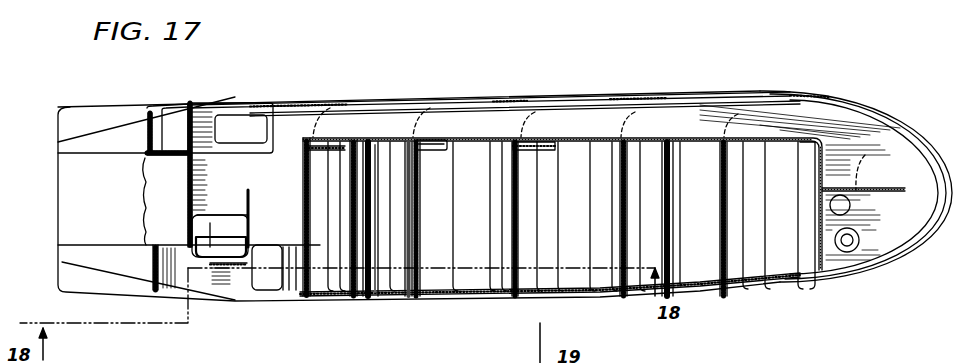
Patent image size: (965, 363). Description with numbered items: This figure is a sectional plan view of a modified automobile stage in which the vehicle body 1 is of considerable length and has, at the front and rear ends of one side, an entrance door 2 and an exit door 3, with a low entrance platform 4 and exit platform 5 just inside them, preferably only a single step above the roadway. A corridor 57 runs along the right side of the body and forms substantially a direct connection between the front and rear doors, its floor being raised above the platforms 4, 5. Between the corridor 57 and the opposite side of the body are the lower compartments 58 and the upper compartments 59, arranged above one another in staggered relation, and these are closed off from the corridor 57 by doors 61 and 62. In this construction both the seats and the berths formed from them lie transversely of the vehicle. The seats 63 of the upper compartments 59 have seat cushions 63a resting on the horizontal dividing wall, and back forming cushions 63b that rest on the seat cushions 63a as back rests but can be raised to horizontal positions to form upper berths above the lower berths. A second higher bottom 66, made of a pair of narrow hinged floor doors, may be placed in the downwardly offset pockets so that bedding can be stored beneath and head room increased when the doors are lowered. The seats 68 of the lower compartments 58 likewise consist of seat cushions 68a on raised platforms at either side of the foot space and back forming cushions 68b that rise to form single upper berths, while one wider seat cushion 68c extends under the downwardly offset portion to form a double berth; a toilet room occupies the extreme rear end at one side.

The vehicle body 1 is at (322, 95).
The entrance door 2 is at (196, 103).
The exit door 3 is at (858, 122).
The entrance platform 4 is at (215, 118).
The exit platform 5 is at (843, 130).
The corridor 57 is at (398, 108).
The lower compartments 58 is at (431, 280).
The upper compartments 59 is at (586, 270).
The door 61 is at (440, 136).
The door 62 is at (341, 137).
The seats 63 is at (776, 200).
The seat cushions 63a is at (724, 264).
The back forming cushions 63b is at (698, 268).
The second higher bottom 66 is at (325, 182).
The seats 68 is at (472, 222).
The seat cushions 68a is at (478, 280).
The back forming cushions 68b is at (514, 306).
The seat cushion 68c is at (388, 280).